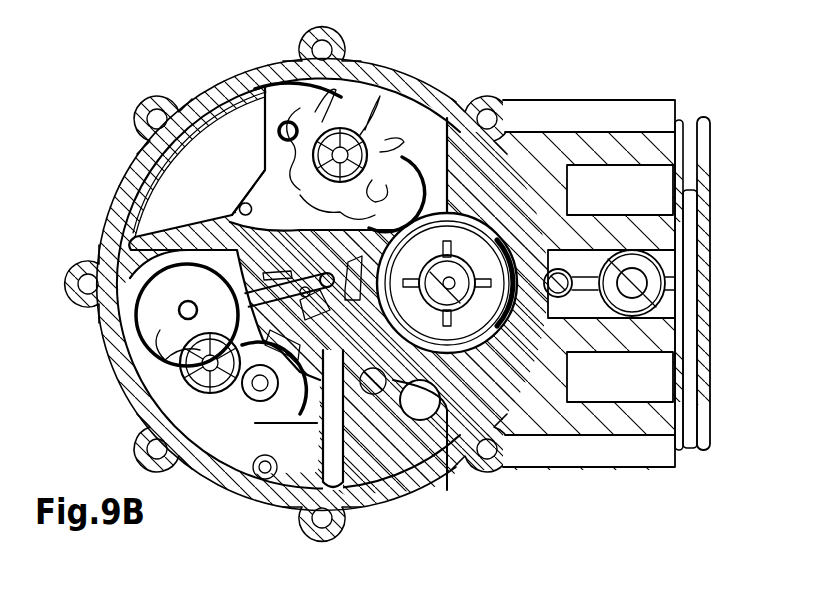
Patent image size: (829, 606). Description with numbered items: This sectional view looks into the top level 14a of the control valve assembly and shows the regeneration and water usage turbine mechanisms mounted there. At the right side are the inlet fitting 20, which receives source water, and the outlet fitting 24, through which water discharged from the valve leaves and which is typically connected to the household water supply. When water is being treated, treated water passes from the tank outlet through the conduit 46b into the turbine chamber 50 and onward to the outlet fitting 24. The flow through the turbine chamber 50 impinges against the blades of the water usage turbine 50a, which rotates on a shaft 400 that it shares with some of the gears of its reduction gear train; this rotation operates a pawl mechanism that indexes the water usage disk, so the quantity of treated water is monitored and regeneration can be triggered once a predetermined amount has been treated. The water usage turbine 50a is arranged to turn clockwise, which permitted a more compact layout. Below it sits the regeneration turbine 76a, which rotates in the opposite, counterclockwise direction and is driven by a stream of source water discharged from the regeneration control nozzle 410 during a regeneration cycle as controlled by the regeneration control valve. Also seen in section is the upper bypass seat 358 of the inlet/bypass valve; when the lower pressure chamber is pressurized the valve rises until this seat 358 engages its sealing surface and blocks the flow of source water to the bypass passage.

The top level 14a is at (100, 340).
The conduit 46b is at (233, 130).
The shaft 400 is at (281, 124).
The water usage turbine 50a is at (345, 102).
The turbine chamber 50 is at (400, 115).
The bypass seat 358 is at (478, 265).
The outlet fitting 24 is at (656, 147).
The inlet fitting 20 is at (676, 396).
The regeneration control nozzle 410 is at (357, 347).
The regeneration turbine 76a is at (202, 413).